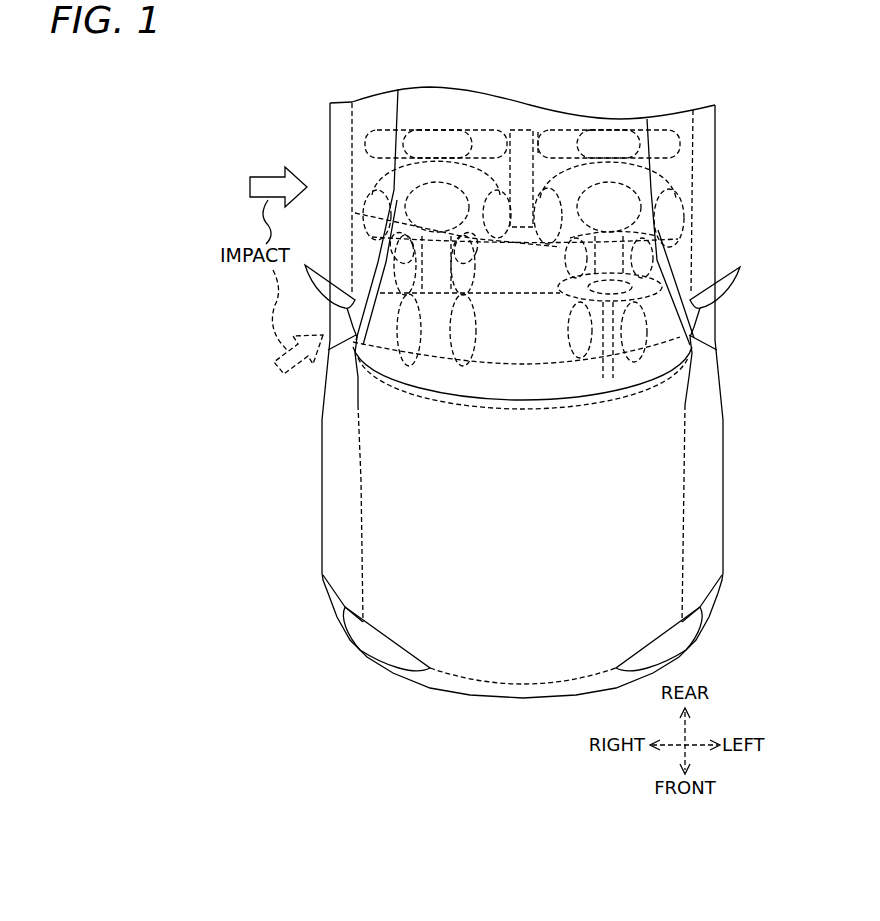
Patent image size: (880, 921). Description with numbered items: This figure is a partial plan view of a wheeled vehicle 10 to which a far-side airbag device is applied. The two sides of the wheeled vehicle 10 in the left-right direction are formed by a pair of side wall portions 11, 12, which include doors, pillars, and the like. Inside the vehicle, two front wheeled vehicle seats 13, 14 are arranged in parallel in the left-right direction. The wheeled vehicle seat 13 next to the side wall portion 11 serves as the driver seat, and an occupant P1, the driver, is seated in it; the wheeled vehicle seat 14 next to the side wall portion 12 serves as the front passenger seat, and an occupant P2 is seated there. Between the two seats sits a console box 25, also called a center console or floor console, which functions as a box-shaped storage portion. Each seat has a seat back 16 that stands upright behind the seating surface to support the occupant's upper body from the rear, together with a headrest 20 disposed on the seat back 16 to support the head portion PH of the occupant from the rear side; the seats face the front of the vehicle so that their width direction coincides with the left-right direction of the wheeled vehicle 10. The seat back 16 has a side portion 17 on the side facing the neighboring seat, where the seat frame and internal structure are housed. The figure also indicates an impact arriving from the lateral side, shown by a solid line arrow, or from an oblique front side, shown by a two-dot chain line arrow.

The wheeled vehicle 10 is at (513, 698).
The side wall portion 11 is at (703, 190).
The side wall portion 12 is at (342, 183).
The wheeled vehicle seat 13 is at (653, 127).
The wheeled vehicle seat 14 is at (385, 128).
The seat back 16 is at (478, 110).
The side portion 17 is at (537, 127).
The headrest 20 is at (400, 135).
The console box 25 is at (520, 127).
The occupant P1 is at (687, 215).
The occupant P2 is at (367, 207).
The head portion PH is at (470, 279).